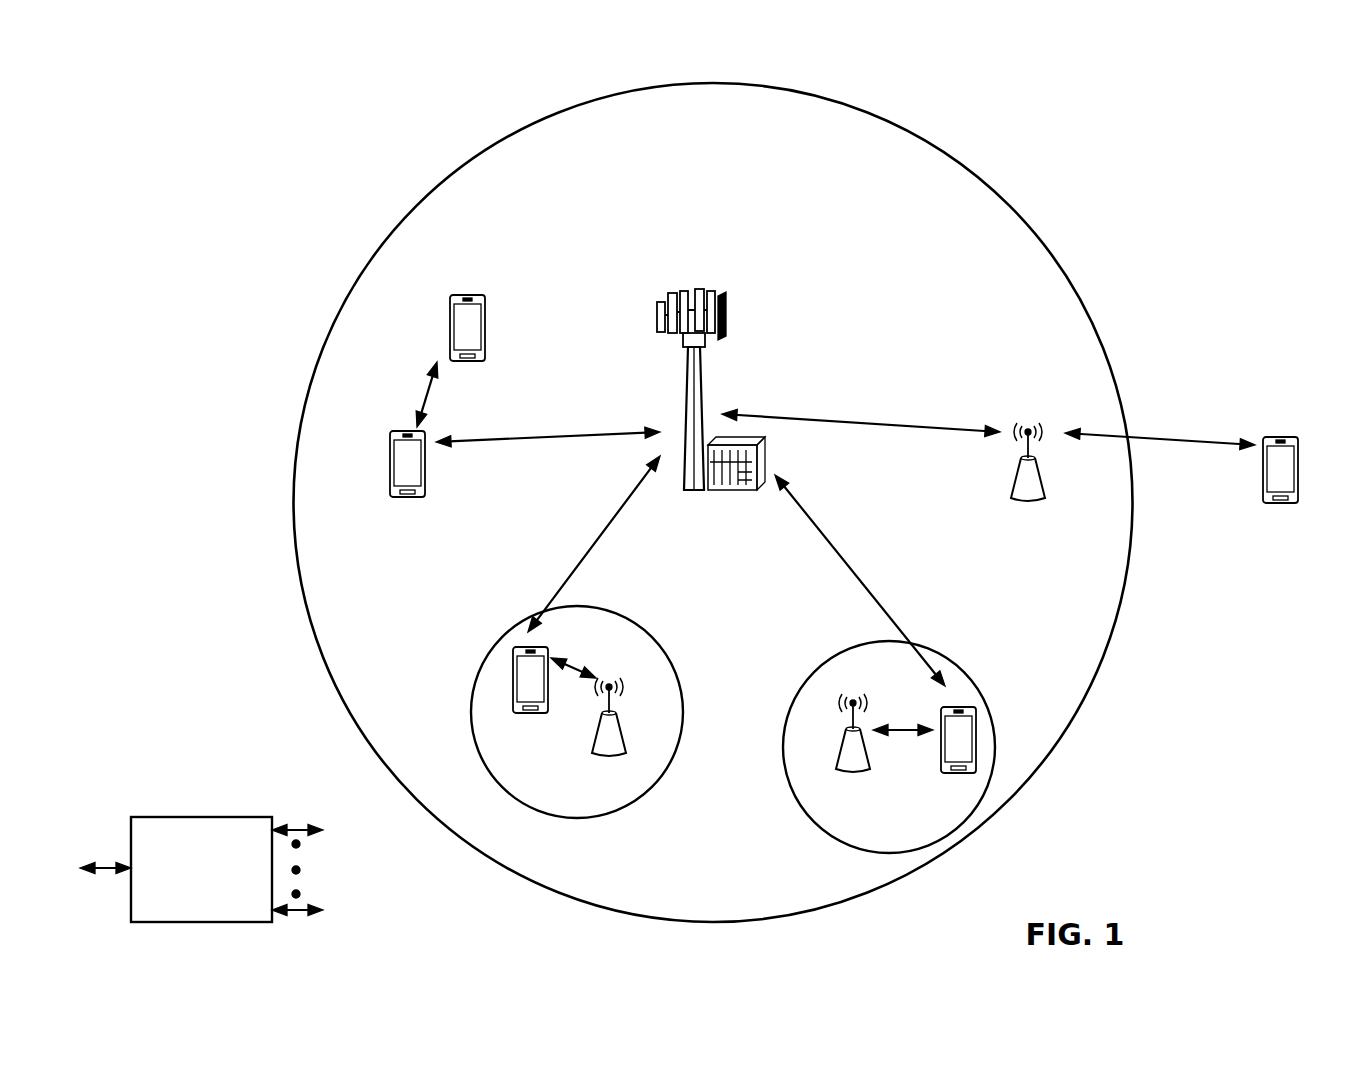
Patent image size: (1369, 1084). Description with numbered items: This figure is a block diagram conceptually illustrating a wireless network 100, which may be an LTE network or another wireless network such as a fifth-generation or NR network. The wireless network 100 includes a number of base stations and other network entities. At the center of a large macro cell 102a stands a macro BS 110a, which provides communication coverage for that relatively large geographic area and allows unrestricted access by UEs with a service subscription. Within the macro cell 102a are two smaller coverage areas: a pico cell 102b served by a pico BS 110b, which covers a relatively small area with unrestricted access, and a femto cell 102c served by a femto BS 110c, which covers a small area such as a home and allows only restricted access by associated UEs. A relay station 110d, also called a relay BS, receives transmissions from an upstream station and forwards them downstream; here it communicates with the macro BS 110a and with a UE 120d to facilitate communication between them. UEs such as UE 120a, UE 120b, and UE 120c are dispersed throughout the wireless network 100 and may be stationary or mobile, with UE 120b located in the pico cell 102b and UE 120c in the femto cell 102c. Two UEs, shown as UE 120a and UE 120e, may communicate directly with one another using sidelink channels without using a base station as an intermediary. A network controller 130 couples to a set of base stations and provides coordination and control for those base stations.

The wireless network 100 is at (180, 75).
The macro cell 102a is at (990, 190).
The pico cell 102b is at (666, 650).
The femto cell 102c is at (825, 660).
The macro BS 110a is at (700, 283).
The pico BS 110b is at (628, 748).
The femto BS 110c is at (838, 757).
The relay station 110d is at (1030, 422).
The UE 120a is at (390, 452).
The UE 120b is at (519, 713).
The UE 120c is at (945, 773).
The UE 120d is at (1292, 436).
The UE 120e is at (450, 308).
The network controller 130 is at (201, 817).